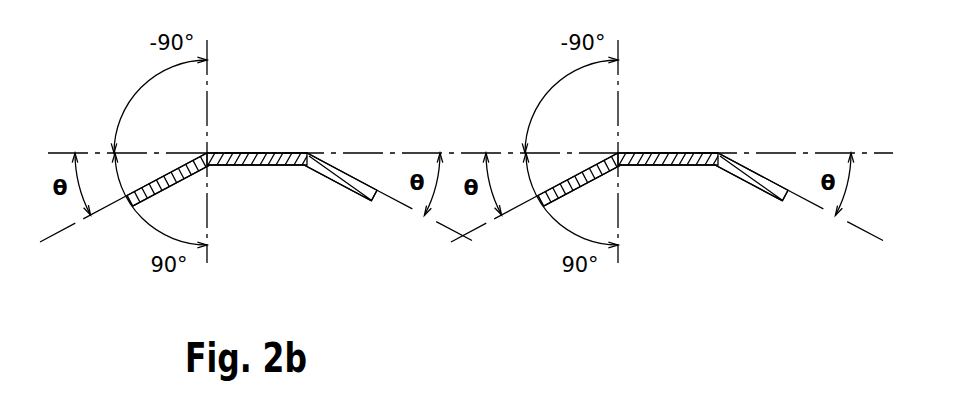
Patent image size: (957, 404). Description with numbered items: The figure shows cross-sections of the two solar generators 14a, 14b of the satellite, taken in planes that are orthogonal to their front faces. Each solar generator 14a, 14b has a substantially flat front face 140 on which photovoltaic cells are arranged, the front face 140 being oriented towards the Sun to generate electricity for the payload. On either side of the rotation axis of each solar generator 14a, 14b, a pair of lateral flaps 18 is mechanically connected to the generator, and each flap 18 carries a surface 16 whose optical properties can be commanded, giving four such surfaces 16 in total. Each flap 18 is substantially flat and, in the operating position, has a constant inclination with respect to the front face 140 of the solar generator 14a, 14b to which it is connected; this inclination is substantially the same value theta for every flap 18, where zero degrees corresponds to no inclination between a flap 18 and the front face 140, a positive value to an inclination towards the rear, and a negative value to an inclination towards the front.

In FIG. 2b, the solar generator 14a is at (255, 167).
In FIG. 2c, the solar generator 14b is at (662, 227).
In FIG. 2b, the front face 140 is at (273, 153).
In FIG. 2c, the front face 140 is at (669, 119).
In FIG. 2b, the surface whose optical properties can be commanded 16 is at (143, 187).
In FIG. 2c, the surface whose optical properties can be commanded 16 is at (663, 147).
In FIG. 2b, the lateral flap 18 is at (131, 205).
In FIG. 2c, the lateral flap 18 is at (662, 237).